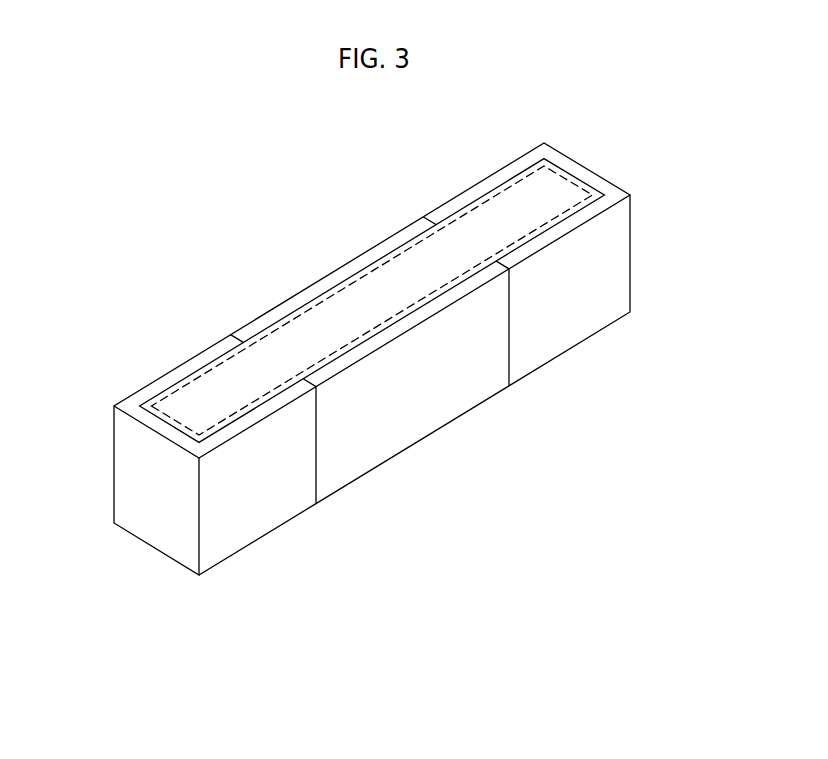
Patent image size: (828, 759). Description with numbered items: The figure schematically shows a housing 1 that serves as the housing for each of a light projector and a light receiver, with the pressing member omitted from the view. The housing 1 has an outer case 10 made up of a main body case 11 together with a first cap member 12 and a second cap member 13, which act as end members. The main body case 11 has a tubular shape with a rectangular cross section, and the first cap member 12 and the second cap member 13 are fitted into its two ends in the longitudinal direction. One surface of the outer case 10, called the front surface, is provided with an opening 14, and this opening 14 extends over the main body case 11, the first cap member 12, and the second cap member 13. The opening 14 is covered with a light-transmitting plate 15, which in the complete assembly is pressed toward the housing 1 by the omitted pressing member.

The housing 1 is at (113, 143).
The outer case 10 is at (665, 353).
The main body case 11 is at (427, 437).
The first cap member 12 is at (265, 538).
The second cap member 13 is at (575, 347).
The opening 14 is at (560, 181).
The light-transmitting plate 15 is at (478, 225).